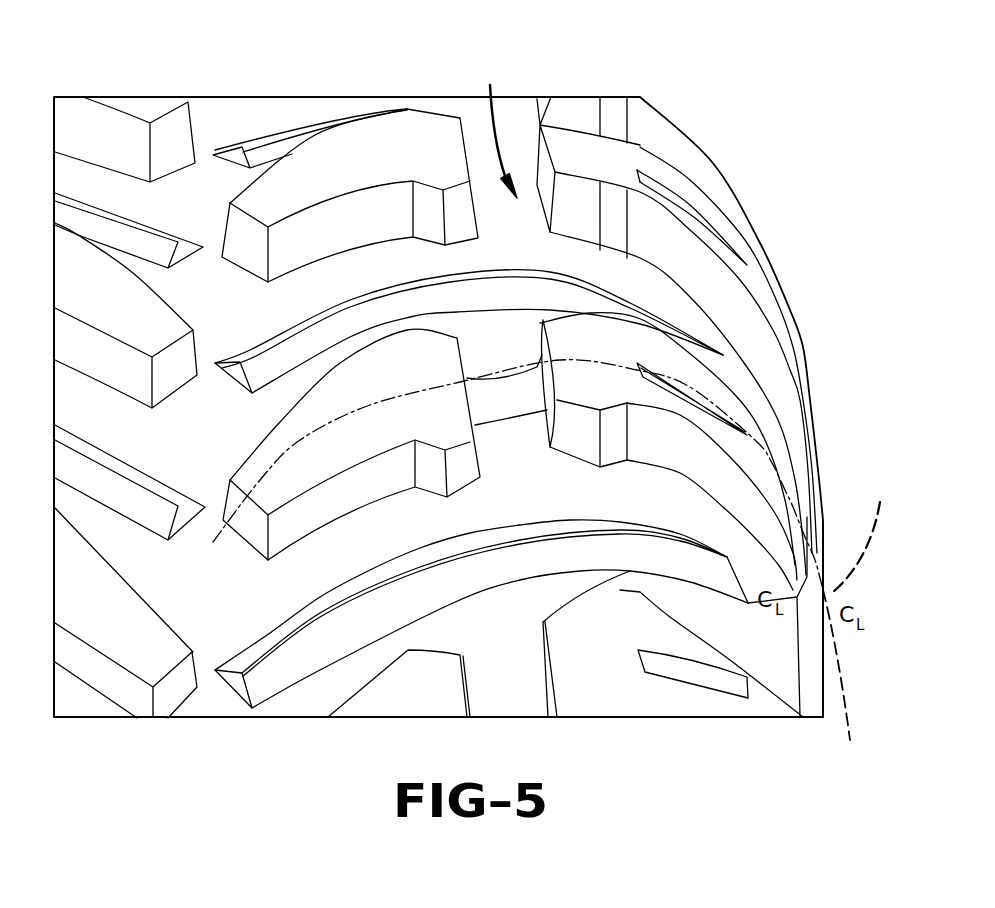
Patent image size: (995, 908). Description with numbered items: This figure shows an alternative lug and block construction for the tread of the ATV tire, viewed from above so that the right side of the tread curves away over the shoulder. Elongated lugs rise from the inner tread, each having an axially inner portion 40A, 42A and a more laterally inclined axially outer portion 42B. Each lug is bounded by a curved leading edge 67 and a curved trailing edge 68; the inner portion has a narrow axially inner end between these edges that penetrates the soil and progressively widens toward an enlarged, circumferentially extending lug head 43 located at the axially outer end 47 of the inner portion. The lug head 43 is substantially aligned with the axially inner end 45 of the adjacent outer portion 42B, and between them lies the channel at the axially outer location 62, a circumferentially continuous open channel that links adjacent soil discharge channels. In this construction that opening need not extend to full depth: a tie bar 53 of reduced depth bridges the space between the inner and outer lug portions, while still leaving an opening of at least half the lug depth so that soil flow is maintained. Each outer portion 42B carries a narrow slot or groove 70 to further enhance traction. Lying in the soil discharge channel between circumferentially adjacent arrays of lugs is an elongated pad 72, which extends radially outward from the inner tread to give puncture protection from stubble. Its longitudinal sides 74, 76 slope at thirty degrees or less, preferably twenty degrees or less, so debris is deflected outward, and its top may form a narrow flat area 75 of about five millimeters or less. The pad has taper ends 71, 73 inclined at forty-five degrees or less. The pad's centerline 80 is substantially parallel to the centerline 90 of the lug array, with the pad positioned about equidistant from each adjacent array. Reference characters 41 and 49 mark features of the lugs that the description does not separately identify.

The axially inner portion of elongated lug 40A is at (120, 602).
The lug end face 41 is at (247, 243).
The axially inner portion of elongated lug 42A is at (290, 442).
The axially outer portion of elongated lug 42B is at (613, 380).
The enlarged lug head 43 is at (430, 410).
The axially inner end of axially outer lug portion 45 is at (543, 347).
The axially outer end of axially inner lug portion 47 is at (460, 343).
The lug edge 49 is at (783, 468).
The tie bar 53 is at (503, 407).
The axially outer location channel 62 is at (495, 119).
The leading edge 67 is at (332, 228).
The trailing edge 68 is at (352, 122).
The narrow slot or groove 70 is at (673, 663).
The taper end of pad 71 is at (247, 695).
The elongated pad 72 is at (283, 686).
The taper end of pad 73 is at (732, 562).
The longitudinal side of pad 74 is at (487, 537).
The flat area of pad 75 is at (440, 567).
The longitudinal side of pad 76 is at (497, 567).
The centerline of elongated pad 80 is at (844, 686).
The centerline of lug array 90 is at (863, 534).